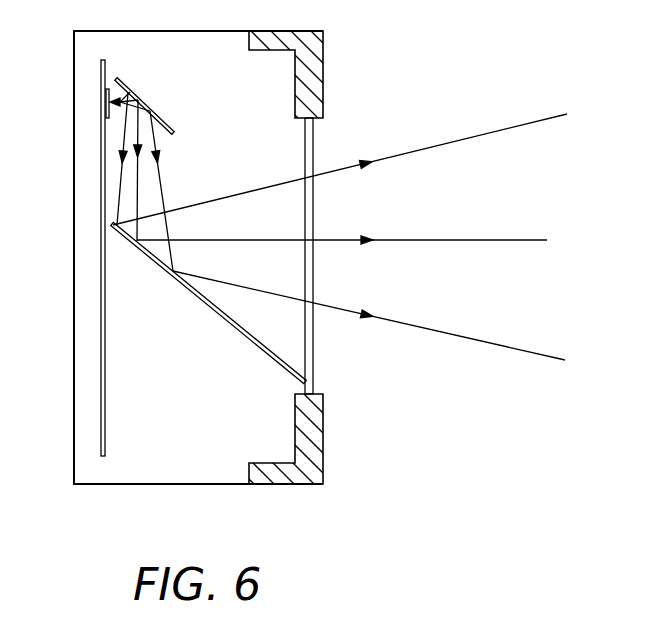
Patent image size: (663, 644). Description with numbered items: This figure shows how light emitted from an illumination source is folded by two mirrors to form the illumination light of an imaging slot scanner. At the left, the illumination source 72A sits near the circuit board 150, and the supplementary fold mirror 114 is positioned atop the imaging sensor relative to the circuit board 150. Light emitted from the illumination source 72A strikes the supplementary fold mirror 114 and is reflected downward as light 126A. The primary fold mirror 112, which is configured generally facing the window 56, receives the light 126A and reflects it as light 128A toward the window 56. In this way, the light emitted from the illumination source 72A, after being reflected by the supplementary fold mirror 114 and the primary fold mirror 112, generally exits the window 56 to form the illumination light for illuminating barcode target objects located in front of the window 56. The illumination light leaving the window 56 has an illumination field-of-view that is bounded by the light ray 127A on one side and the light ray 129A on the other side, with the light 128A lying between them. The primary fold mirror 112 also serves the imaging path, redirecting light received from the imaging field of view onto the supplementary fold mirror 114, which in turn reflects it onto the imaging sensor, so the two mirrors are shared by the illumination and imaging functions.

The window 56 is at (313, 133).
The illumination source 72A is at (106, 94).
The primary fold mirror 112 is at (230, 325).
The supplementary fold mirror 114 is at (153, 109).
The light 126A is at (138, 145).
The light ray 127A is at (418, 152).
The light 128A is at (418, 240).
The light ray 129A is at (415, 327).
The circuit board 150 is at (101, 406).